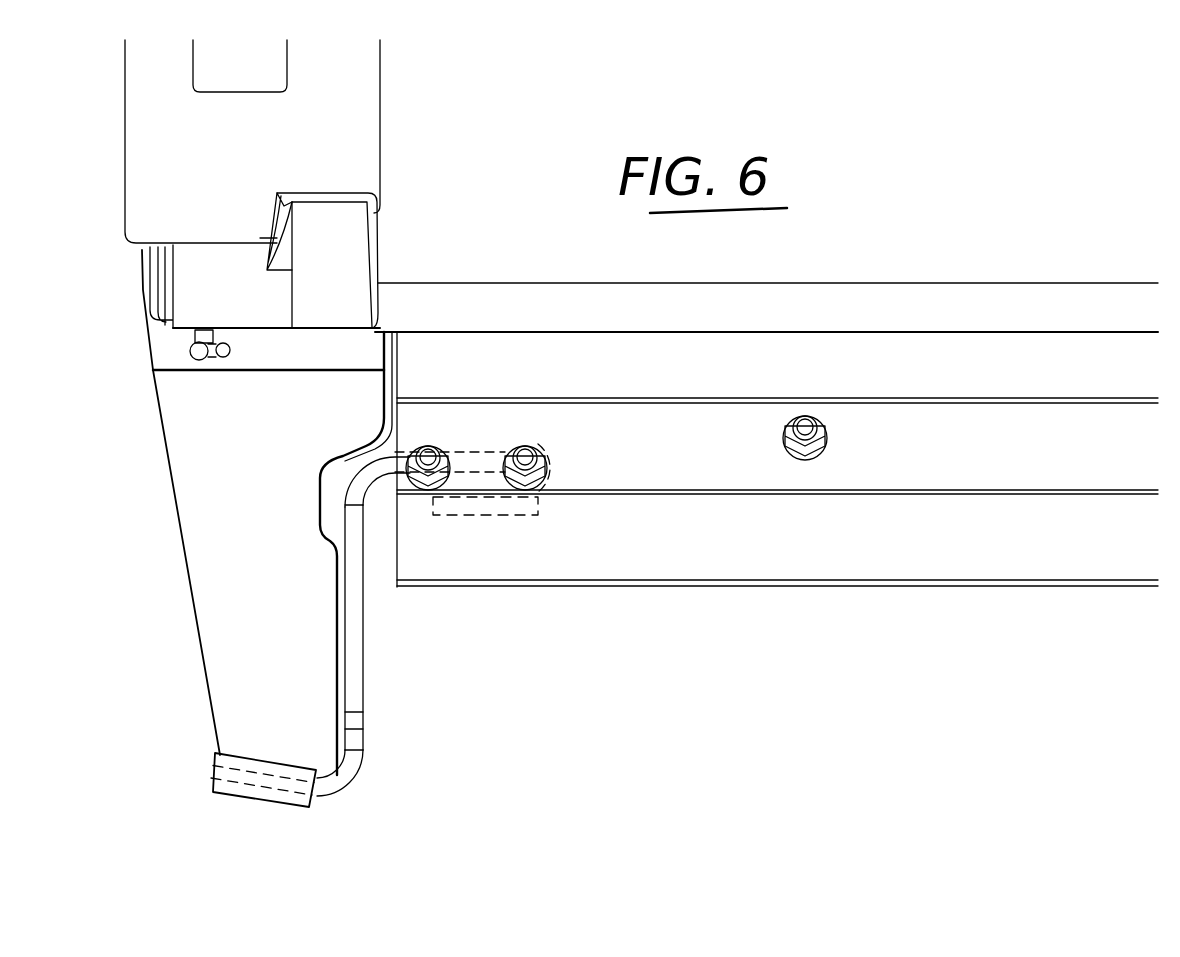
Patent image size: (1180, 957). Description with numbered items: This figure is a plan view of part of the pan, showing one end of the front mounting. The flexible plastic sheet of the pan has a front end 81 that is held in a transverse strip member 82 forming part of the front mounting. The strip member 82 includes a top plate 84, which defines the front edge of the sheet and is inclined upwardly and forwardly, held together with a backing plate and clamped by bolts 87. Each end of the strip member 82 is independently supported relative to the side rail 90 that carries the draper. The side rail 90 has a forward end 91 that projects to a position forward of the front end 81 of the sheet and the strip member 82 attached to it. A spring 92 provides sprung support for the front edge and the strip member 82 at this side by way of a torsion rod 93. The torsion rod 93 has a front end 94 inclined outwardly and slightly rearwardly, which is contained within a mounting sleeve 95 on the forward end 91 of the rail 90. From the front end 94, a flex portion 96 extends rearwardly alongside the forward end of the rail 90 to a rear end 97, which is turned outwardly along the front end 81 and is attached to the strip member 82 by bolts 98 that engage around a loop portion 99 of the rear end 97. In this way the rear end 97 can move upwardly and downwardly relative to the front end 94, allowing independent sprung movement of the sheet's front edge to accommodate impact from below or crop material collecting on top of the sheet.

The front end 81 is at (643, 490).
The transverse strip member 82 is at (981, 428).
The top plate 84 is at (948, 566).
The bolts 87 is at (815, 398).
The side rail 90 is at (178, 433).
The forward end 91 is at (237, 710).
The spring 92 is at (440, 637).
The torsion rod 93 is at (355, 665).
The front end 94 is at (282, 787).
The mounting sleeve 95 is at (263, 760).
The flex portion 96 is at (350, 590).
The rear end 97 is at (470, 457).
The bolts 98 is at (430, 457).
The loop portion 99 is at (533, 512).